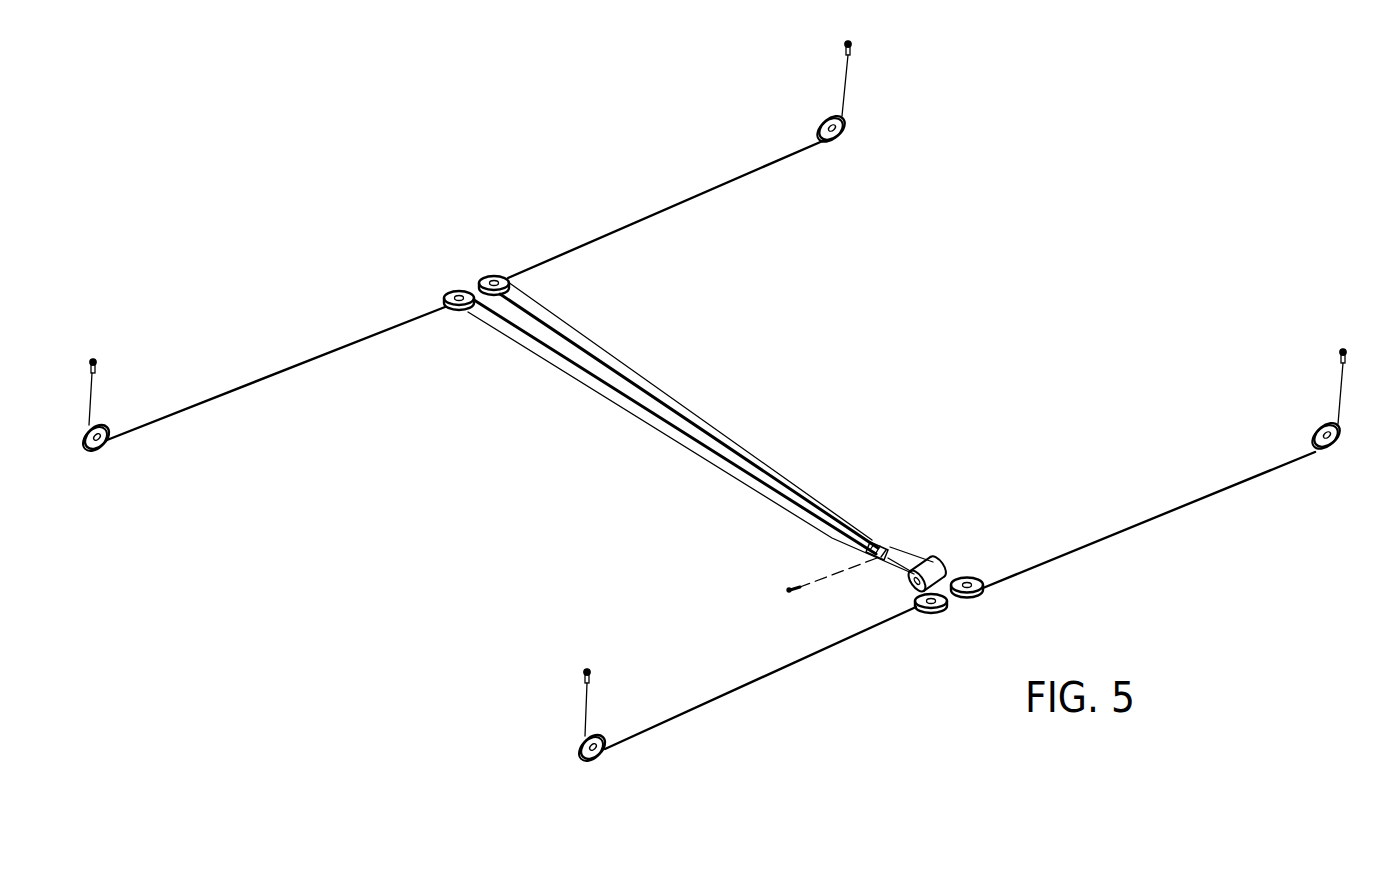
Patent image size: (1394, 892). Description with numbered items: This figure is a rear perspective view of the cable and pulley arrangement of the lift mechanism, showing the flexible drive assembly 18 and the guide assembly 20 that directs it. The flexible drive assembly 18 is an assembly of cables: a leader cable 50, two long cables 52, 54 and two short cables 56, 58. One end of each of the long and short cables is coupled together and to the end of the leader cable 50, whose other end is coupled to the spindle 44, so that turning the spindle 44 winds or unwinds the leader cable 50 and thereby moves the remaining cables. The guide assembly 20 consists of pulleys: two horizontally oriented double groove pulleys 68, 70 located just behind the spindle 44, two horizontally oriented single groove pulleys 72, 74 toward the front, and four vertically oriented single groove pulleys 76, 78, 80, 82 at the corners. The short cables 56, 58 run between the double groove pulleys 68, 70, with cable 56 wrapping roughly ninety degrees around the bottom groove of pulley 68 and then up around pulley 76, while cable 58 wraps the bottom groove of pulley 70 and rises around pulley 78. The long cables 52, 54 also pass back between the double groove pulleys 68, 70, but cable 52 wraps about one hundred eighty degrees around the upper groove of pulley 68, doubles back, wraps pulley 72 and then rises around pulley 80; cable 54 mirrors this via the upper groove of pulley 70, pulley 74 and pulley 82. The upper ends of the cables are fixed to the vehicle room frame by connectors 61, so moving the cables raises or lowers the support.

The flexible drive assembly 18 is at (668, 440).
The guide assembly 20 is at (489, 271).
The spindle 44 is at (908, 590).
The leader cable 50 is at (903, 556).
The long cable 52 is at (1150, 521).
The long cable 54 is at (782, 672).
The short cable 56 is at (672, 208).
The short cable 58 is at (282, 372).
The connector 61 is at (853, 54).
The double groove pulley 68 is at (512, 285).
The double groove pulley 70 is at (448, 292).
The single groove pulley 72 is at (977, 575).
The single groove pulley 74 is at (946, 607).
The vertically oriented single groove pulley 76 is at (840, 140).
The vertically oriented single groove pulley 78 is at (100, 450).
The vertically oriented single groove pulley 80 is at (1333, 448).
The vertically oriented single groove pulley 82 is at (598, 758).